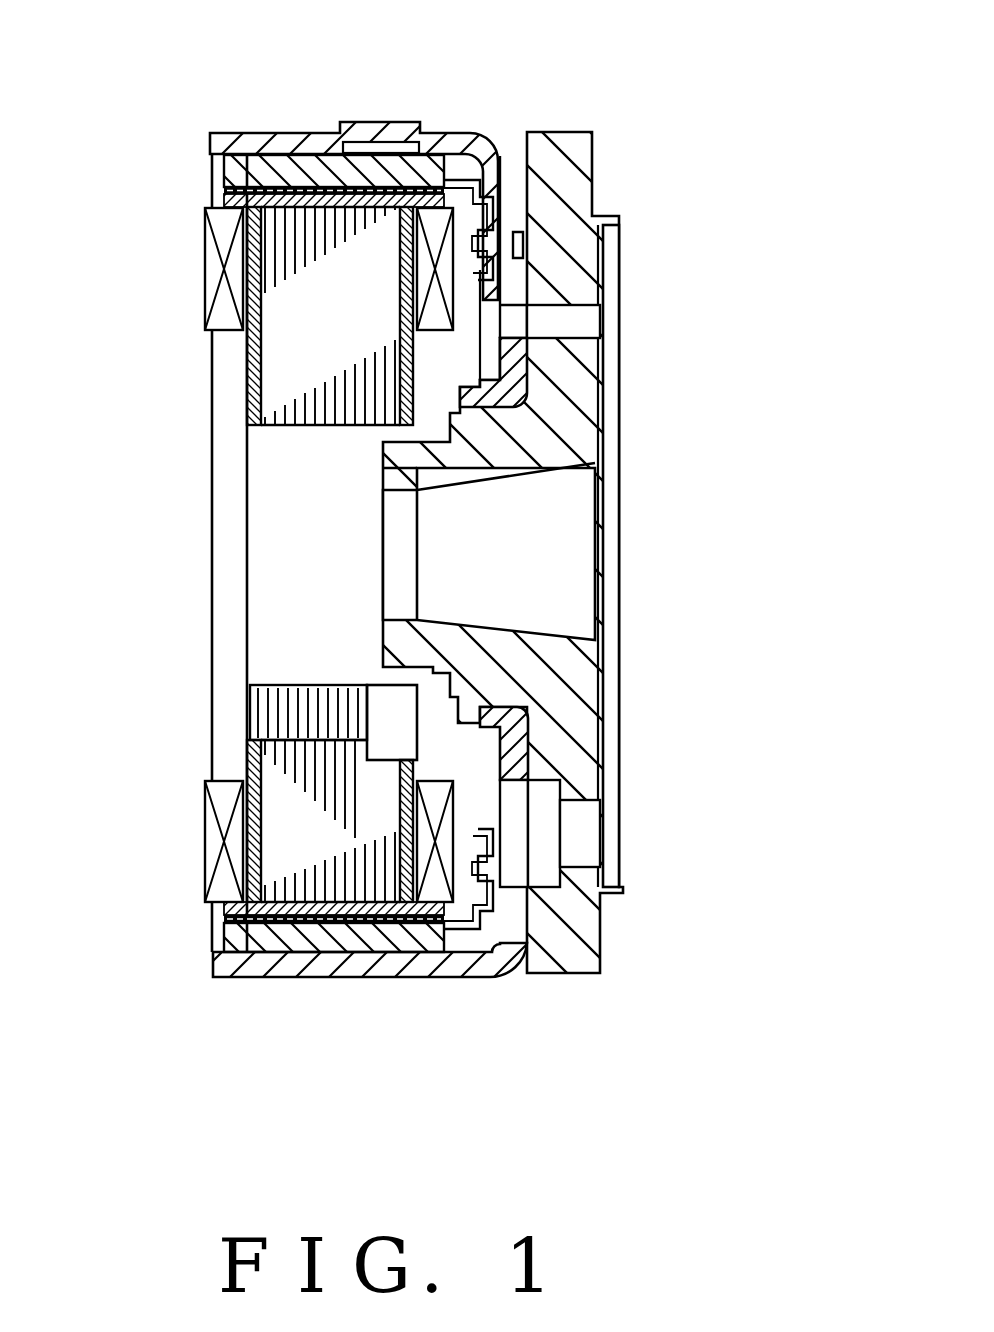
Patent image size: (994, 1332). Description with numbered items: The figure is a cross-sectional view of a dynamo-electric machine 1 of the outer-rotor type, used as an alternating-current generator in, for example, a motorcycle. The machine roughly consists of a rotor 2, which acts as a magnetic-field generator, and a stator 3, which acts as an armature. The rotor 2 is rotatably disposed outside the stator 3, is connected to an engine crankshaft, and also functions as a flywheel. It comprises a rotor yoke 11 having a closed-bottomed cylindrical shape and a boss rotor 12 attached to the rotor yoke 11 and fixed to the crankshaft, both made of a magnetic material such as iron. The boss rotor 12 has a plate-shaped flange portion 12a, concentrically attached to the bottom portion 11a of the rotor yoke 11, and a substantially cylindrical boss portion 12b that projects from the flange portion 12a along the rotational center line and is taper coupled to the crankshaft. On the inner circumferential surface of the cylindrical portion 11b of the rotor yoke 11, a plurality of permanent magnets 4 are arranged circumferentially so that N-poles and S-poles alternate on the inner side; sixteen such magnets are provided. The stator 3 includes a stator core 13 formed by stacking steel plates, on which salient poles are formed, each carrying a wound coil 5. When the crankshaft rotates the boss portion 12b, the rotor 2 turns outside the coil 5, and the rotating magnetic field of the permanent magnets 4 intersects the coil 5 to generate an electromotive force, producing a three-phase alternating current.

The dynamo-electric machine 1 is at (633, 167).
The rotor 2 is at (230, 130).
The stator 3 is at (281, 358).
The permanent magnet 4 is at (210, 175).
The coil 5 is at (217, 273).
The rotor yoke 11 is at (476, 129).
The bottom portion 11a is at (513, 283).
The cylindrical portion 11b is at (408, 967).
The boss rotor 12 is at (560, 738).
The flange portion 12a is at (570, 940).
The boss portion 12b is at (397, 635).
The stator core 13 is at (297, 842).